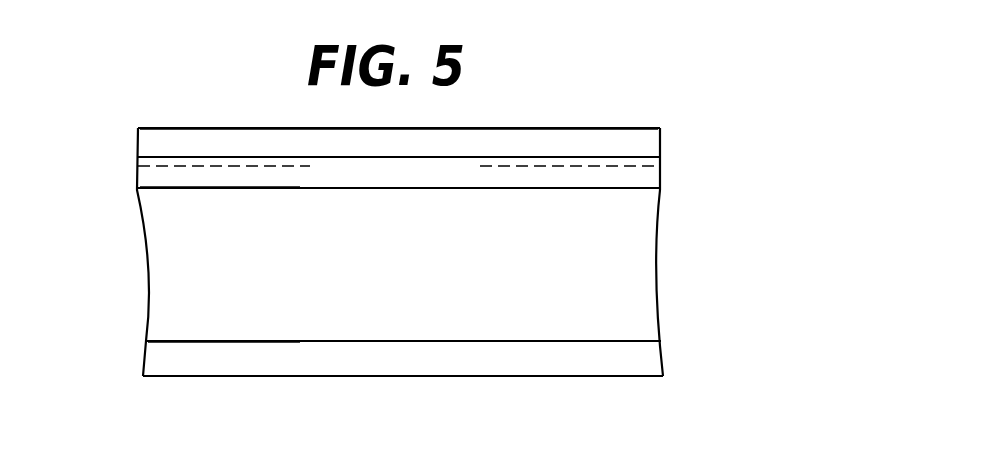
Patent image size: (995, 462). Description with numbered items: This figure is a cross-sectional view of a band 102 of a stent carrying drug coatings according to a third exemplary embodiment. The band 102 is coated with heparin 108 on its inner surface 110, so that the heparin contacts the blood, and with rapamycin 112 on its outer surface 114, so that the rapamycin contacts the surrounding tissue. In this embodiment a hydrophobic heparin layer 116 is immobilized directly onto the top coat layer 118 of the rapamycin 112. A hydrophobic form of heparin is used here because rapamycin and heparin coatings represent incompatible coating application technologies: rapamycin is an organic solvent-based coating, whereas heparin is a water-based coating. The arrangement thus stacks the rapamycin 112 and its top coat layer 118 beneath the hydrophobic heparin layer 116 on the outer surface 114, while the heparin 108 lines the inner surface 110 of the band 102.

The band 102 is at (638, 265).
The hydrophobic heparin layer 116 is at (188, 142).
The top coat layer 118 is at (652, 162).
The rapamycin 112 is at (650, 175).
The outer surface 114 is at (138, 192).
The heparin 108 is at (652, 358).
The inner surface 110 is at (140, 342).